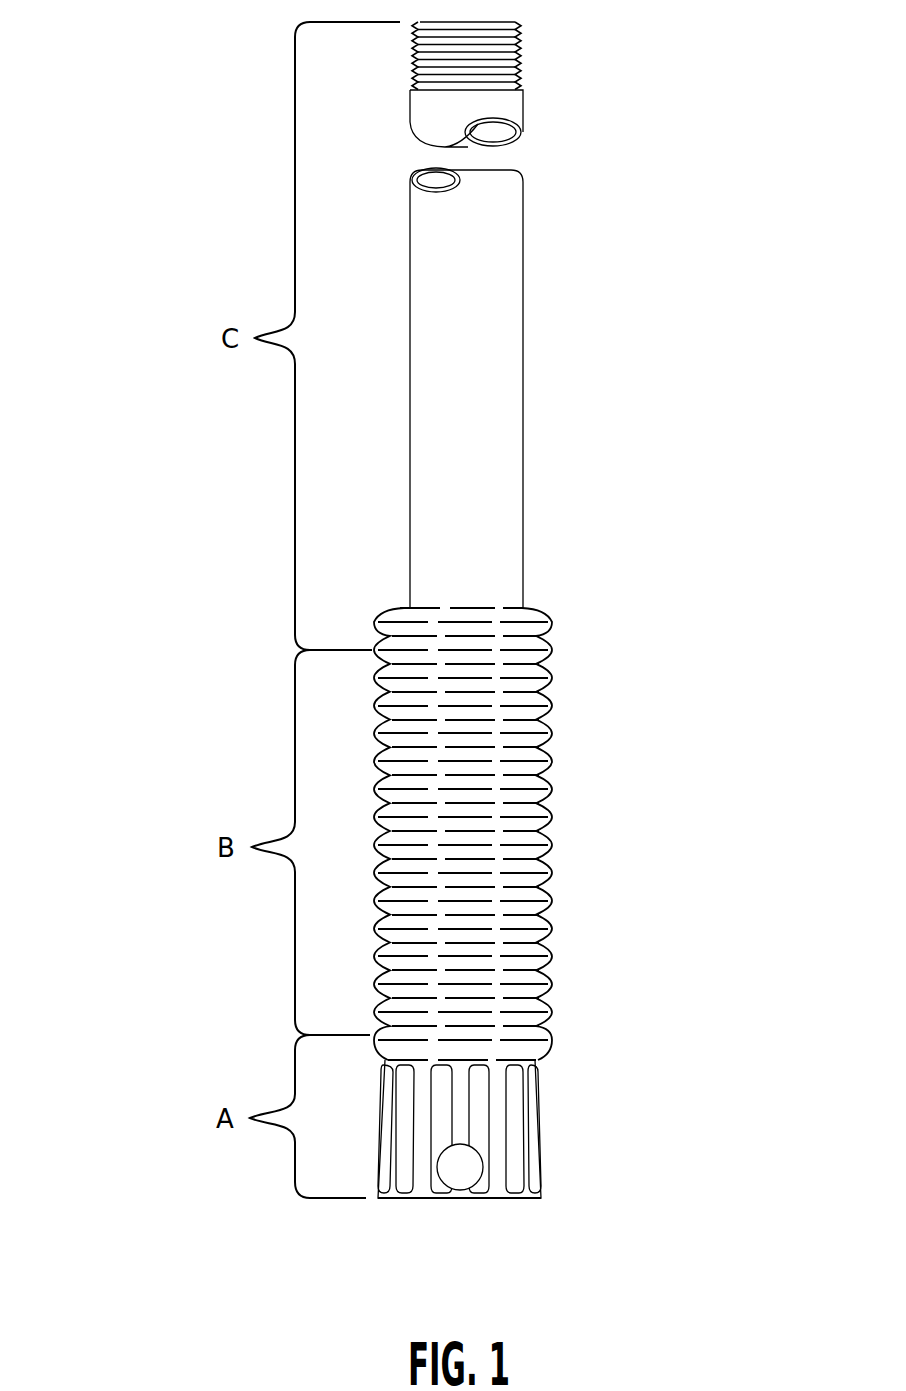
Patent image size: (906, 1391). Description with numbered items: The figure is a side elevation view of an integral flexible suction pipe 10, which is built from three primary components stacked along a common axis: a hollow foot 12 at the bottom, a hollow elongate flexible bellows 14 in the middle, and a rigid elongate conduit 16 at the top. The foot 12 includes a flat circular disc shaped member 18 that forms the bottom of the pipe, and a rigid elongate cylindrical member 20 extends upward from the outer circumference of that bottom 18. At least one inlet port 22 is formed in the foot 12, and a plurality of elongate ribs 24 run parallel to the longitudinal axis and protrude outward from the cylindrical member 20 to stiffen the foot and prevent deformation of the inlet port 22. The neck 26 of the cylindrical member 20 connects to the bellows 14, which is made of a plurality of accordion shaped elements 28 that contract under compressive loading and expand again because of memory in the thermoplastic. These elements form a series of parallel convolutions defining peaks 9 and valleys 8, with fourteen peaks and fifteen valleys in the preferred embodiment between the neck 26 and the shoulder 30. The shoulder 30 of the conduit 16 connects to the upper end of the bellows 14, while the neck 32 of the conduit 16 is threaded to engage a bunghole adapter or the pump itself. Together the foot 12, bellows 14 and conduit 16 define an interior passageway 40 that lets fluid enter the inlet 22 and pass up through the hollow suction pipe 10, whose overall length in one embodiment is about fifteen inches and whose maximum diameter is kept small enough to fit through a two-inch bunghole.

The integral flexible suction pipe 10 is at (170, 598).
The neck of the conduit 32 is at (521, 45).
The interior passageway 40 is at (440, 181).
The rigid elongate conduit 16 is at (483, 273).
The shoulder of the conduit 30 is at (547, 619).
The hollow elongate flexible bellows 14 is at (466, 800).
The accordion shaped elements 28 is at (665, 935).
The peaks 9 is at (553, 846).
The valleys 8 is at (538, 862).
The neck of the cylindrical member 26 is at (541, 1063).
The elongate ribs 24 is at (535, 1154).
The hollow foot 12 is at (523, 1173).
The rigid elongate cylindrical member 20 is at (462, 1125).
The inlet port 22 is at (462, 1192).
The flat circular disc shaped member 18 is at (497, 1200).